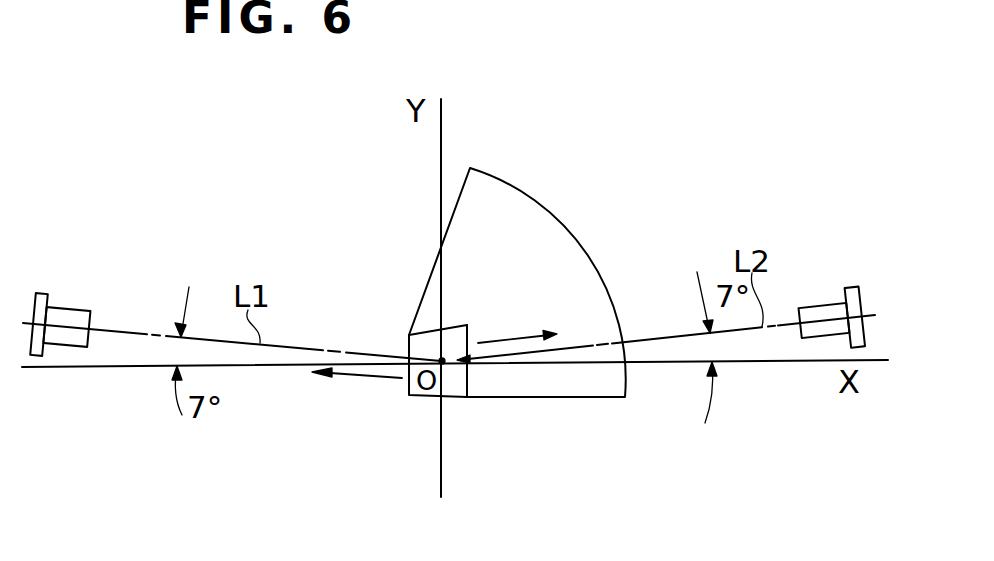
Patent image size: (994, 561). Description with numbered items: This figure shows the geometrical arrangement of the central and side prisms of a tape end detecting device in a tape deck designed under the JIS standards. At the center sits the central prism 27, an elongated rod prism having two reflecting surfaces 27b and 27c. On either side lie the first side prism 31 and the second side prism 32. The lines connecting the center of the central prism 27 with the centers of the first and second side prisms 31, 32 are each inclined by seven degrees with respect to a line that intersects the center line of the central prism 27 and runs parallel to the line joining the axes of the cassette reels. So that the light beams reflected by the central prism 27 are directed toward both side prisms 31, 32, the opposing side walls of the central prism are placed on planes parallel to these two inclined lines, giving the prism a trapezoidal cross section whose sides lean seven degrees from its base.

The central prism 27 is at (482, 377).
The reflecting surface 27b is at (452, 387).
The reflecting surface 27c is at (426, 342).
The first side prism 31 is at (60, 322).
The second side prism 32 is at (822, 312).